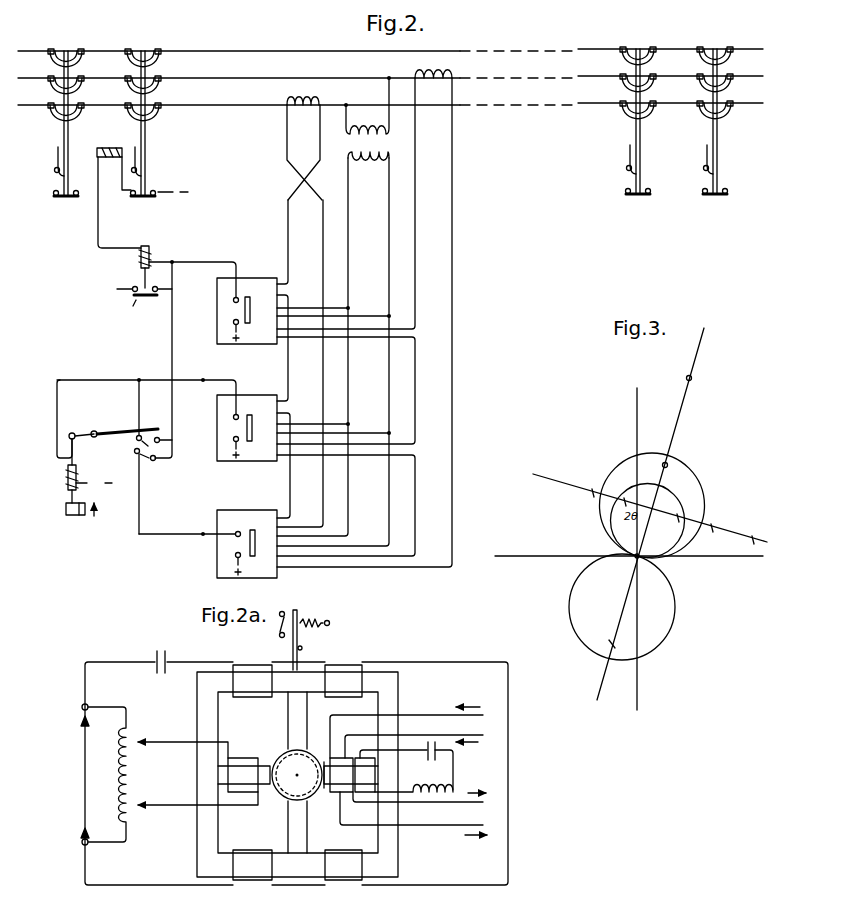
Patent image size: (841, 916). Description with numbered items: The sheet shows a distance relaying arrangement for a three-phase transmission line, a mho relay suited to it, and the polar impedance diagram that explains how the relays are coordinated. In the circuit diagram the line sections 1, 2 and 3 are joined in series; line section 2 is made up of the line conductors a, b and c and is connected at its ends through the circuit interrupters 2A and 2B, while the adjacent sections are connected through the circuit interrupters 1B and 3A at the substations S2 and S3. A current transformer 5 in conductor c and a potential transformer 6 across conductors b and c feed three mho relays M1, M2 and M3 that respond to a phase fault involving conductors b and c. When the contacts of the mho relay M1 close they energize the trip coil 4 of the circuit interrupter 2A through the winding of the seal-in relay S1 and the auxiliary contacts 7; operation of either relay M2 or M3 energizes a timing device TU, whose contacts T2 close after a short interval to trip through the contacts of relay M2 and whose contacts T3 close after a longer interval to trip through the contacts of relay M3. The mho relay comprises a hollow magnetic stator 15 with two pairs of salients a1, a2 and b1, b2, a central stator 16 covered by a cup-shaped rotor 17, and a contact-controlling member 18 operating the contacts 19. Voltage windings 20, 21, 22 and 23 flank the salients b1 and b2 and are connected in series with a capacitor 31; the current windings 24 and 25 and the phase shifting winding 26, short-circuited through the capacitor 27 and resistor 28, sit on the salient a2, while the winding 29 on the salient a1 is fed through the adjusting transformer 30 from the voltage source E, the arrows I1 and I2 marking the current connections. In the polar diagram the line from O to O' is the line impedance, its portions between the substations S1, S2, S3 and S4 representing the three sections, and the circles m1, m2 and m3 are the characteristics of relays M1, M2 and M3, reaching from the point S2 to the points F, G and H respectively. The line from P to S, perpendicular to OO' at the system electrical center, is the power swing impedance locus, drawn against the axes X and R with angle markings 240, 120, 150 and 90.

In FIG. 2, the line section 1 is at (32, 108).
In FIG. 2, the line section 2 is at (583, 100).
In FIG. 2, the line section 3 is at (754, 100).
In FIG. 2, the line conductor a is at (608, 48).
In FIG. 2, the line conductor b is at (608, 75).
In FIG. 2, the line conductor c is at (608, 102).
In FIG. 2, the circuit interrupter 1B is at (62, 133).
In FIG. 2, the circuit interrupter 2A is at (148, 133).
In FIG. 2, the circuit interrupter 2B is at (634, 130).
In FIG. 2, the circuit interrupter 3A is at (718, 135).
In FIG. 2, the substation S2 is at (101, 108).
In FIG. 3, the substation S2 is at (648, 550).
In FIG. 2, the substation S3 is at (676, 100).
In FIG. 3, the substation S3 is at (657, 465).
In FIG. 2, the trip coil 4 is at (112, 148).
In FIG. 2, the auxiliary contacts 7 is at (156, 192).
In FIG. 2, the current transformer 5 is at (314, 104).
In FIG. 2, the potential transformer 6 is at (384, 148).
In FIG. 2, the substation S1 is at (140, 273).
In FIG. 3, the substation S1 is at (611, 644).
In FIG. 2, the mho relay M1 is at (257, 278).
In FIG. 2, the mho relay M2 is at (257, 396).
In FIG. 2, the mho relay M3 is at (257, 510).
In FIG. 2, the timing device TU is at (107, 448).
In FIG. 2, the contacts T2 is at (155, 420).
In FIG. 2, the contacts T3 is at (150, 492).
In FIG. 3, the reference axis R is at (637, 558).
In FIG. 3, the axis X is at (634, 539).
In FIG. 3, the impedance characteristic circle m1 is at (676, 497).
In FIG. 3, the impedance characteristic circle m2 is at (706, 492).
In FIG. 3, the impedance characteristic circle m3 is at (676, 604).
In FIG. 3, the end point of line impedance characteristic O is at (646, 520).
In FIG. 3, the end point of line impedance characteristic O' is at (723, 327).
In FIG. 3, the end point of power swing impedance locus P is at (643, 505).
In FIG. 3, the end point of power swing impedance locus S is at (775, 541).
In FIG. 3, the substation S4 is at (693, 380).
In FIG. 3, the point H is at (605, 662).
In FIG. 3, the point G is at (676, 457).
In FIG. 3, the point F is at (661, 492).
In FIG. 3, the 240 degree angle 240 is at (582, 503).
In FIG. 3, the 120 degree angle 120 is at (710, 513).
In FIG. 3, the 150 degree angle 150 is at (675, 528).
In FIG. 3, the 90 degree angle 90 is at (754, 545).
In FIG. 2A, the capacitor 31 is at (157, 652).
In FIG. 2A, the voltage source E is at (82, 774).
In FIG. 2A, the adjusting transformer 30 is at (136, 765).
In FIG. 2A, the hollow magnetic stator 15 is at (398, 690).
In FIG. 2A, the central stator 16 is at (286, 754).
In FIG. 2A, the rotor 17 is at (279, 795).
In FIG. 2A, the salient b1 is at (305, 709).
In FIG. 2A, the salient b2 is at (288, 831).
In FIG. 2A, the salient a1 is at (264, 760).
In FIG. 2A, the salient a2 is at (325, 760).
In FIG. 2A, the winding 20 is at (250, 668).
In FIG. 2A, the winding 21 is at (338, 668).
In FIG. 2A, the winding 22 is at (349, 879).
In FIG. 2A, the winding 23 is at (255, 879).
In FIG. 2A, the winding 29 is at (243, 796).
In FIG. 2A, the current winding 25 is at (348, 762).
In FIG. 2A, the phase shifting winding 26 is at (366, 774).
In FIG. 2A, the capacitor 27 is at (438, 746).
In FIG. 2A, the resistor 28 is at (433, 786).
In FIG. 2A, the current winding 24 is at (328, 797).
In FIG. 2A, the contact-controlling member 18 is at (300, 616).
In FIG. 2A, the contacts 19 is at (286, 634).
In FIG. 2A, the current I1 is at (471, 772).
In FIG. 2A, the current I2 is at (473, 769).